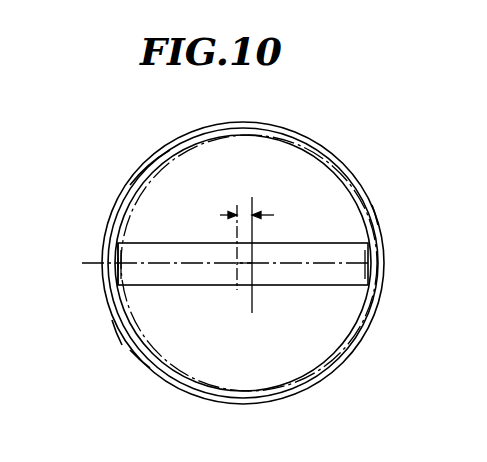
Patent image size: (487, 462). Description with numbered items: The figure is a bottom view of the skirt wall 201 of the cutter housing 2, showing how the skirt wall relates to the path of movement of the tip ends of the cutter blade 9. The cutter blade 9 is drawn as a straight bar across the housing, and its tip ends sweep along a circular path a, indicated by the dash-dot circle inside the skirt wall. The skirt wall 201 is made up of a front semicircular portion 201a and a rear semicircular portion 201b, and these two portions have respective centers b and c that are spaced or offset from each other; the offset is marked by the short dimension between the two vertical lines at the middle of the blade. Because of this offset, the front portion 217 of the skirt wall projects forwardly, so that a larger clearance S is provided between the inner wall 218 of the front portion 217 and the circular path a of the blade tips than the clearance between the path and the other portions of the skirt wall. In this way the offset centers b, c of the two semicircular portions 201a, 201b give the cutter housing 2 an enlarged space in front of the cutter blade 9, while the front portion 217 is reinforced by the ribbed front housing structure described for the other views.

The cutter housing 2 is at (299, 131).
The skirt wall 201 is at (344, 167).
The front semicircular portion 201a is at (129, 184).
The rear semicircular portion 201b is at (375, 208).
The cutter blade 9 is at (302, 283).
The clearance S is at (116, 244).
The circular path a is at (117, 266).
The center b is at (253, 263).
The center c is at (237, 268).
The front portion 217 is at (115, 328).
The inner wall 218 is at (149, 341).